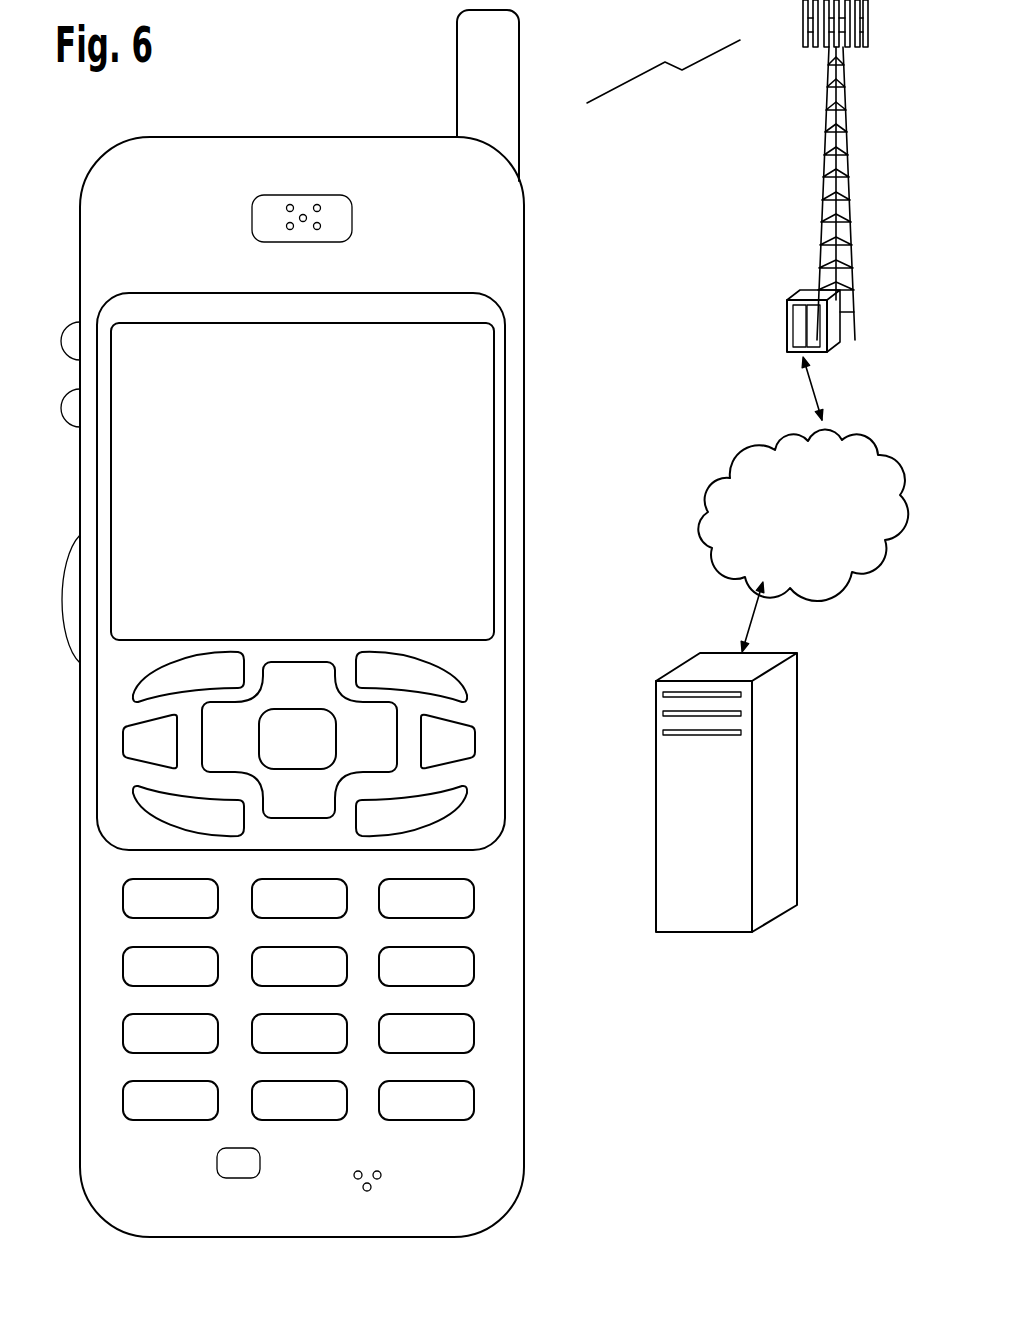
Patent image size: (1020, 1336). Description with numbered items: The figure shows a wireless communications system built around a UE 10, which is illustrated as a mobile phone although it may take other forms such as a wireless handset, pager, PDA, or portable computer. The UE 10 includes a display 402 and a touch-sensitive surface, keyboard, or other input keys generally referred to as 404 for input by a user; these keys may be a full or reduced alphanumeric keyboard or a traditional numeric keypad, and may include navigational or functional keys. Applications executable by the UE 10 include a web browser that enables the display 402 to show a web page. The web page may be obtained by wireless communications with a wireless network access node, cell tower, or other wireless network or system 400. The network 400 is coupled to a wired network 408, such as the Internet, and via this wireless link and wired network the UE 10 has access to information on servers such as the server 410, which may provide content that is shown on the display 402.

The UE 10 is at (133, 1237).
The wireless communication network or system 400 is at (818, 193).
The display 402 is at (495, 338).
The input keys 404 is at (535, 650).
The wired network 408 is at (725, 566).
The server 410 is at (702, 932).